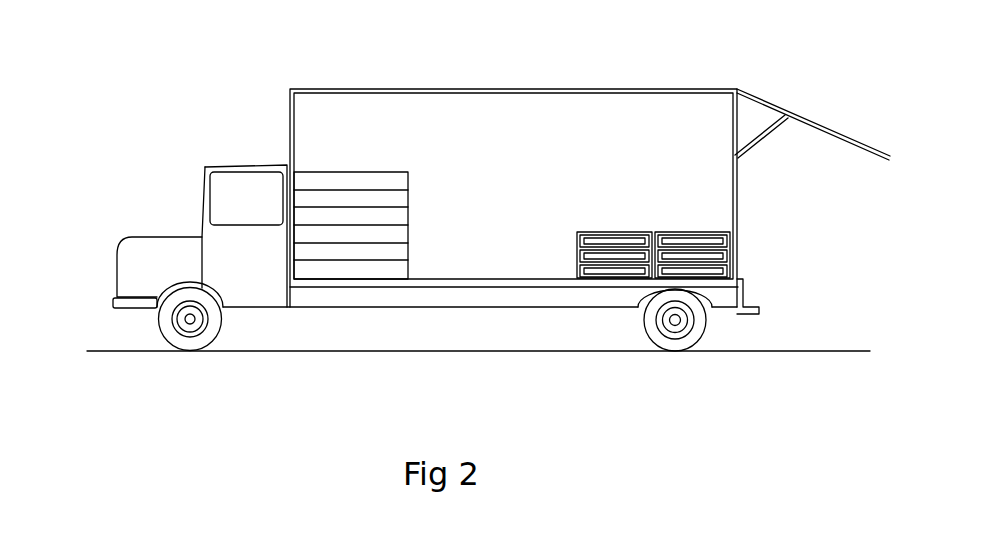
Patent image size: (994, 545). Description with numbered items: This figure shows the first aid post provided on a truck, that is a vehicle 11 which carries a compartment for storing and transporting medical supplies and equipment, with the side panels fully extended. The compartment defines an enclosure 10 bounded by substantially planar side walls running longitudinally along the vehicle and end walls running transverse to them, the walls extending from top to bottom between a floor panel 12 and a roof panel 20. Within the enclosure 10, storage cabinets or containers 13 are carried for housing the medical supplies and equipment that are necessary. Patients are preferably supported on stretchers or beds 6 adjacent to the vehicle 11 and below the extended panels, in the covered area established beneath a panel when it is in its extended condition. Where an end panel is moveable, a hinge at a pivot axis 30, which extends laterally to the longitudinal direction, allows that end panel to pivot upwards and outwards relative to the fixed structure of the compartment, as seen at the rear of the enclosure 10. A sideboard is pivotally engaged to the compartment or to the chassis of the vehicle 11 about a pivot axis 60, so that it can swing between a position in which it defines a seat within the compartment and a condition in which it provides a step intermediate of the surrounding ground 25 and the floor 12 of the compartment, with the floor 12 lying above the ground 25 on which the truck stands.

The enclosure 10 is at (475, 272).
The vehicle 11 is at (198, 201).
The floor panel 12 is at (563, 285).
The stretchers or beds 6 is at (360, 170).
The storage cabinets or containers 13 is at (707, 230).
The roof panel 20 is at (630, 90).
The pivot axis 30 is at (737, 90).
The pivot axis 60 is at (743, 282).
The surrounding ground 25 is at (748, 352).